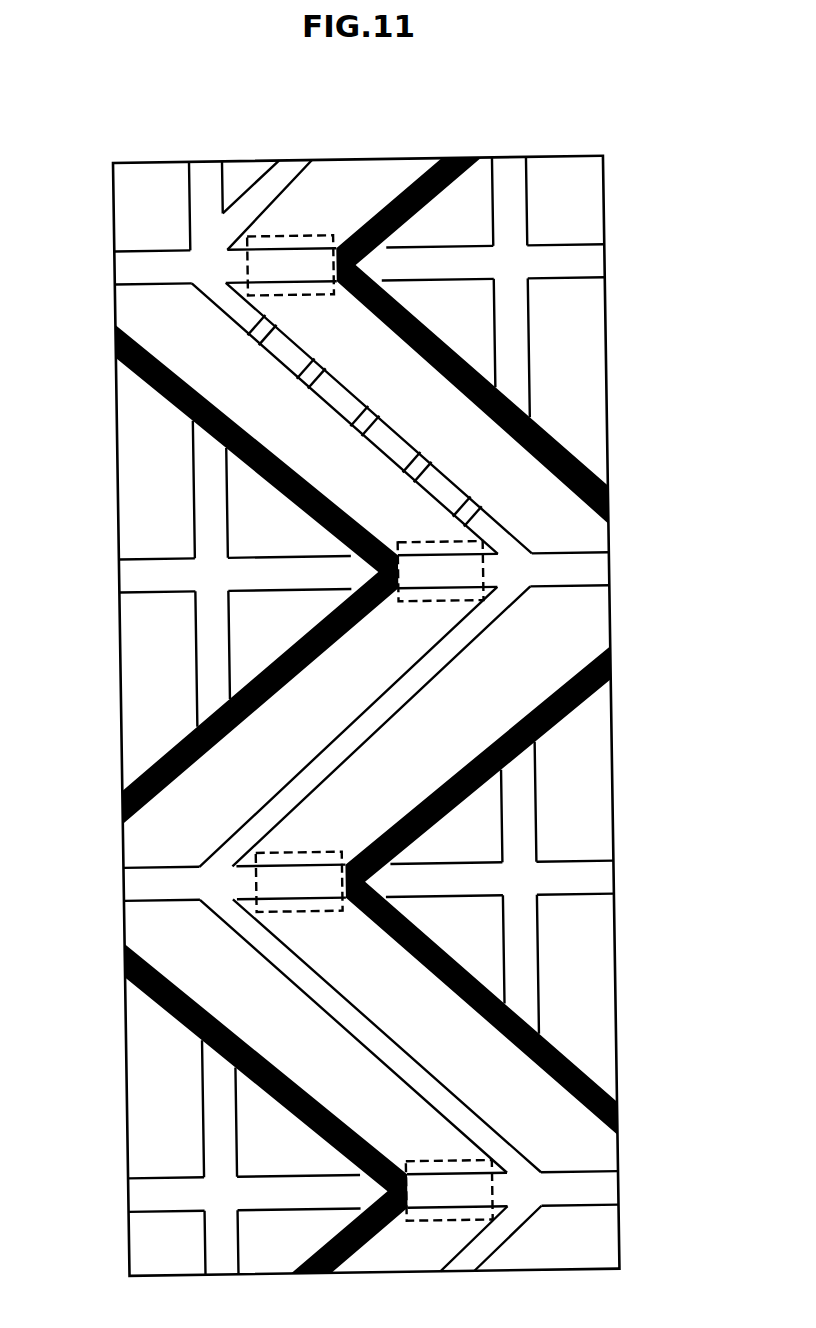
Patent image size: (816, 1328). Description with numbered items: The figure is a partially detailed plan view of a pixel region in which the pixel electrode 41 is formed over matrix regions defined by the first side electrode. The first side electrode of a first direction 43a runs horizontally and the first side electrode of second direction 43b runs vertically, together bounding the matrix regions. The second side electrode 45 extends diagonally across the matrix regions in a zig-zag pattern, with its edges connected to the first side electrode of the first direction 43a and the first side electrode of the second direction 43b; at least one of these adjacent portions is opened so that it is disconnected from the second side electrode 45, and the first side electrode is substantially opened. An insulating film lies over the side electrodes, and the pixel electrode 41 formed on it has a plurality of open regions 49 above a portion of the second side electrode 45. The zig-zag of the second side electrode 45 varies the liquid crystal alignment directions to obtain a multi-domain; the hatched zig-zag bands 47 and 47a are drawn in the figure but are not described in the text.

The pixel electrode 41 is at (478, 306).
The first side electrode of a first direction 43a is at (138, 267).
The first side electrode of second direction 43b is at (513, 345).
The second side electrode 45 is at (450, 478).
The common electrode 47 is at (522, 406).
The common electrode portion 47a is at (163, 402).
The open regions 49 is at (313, 363).